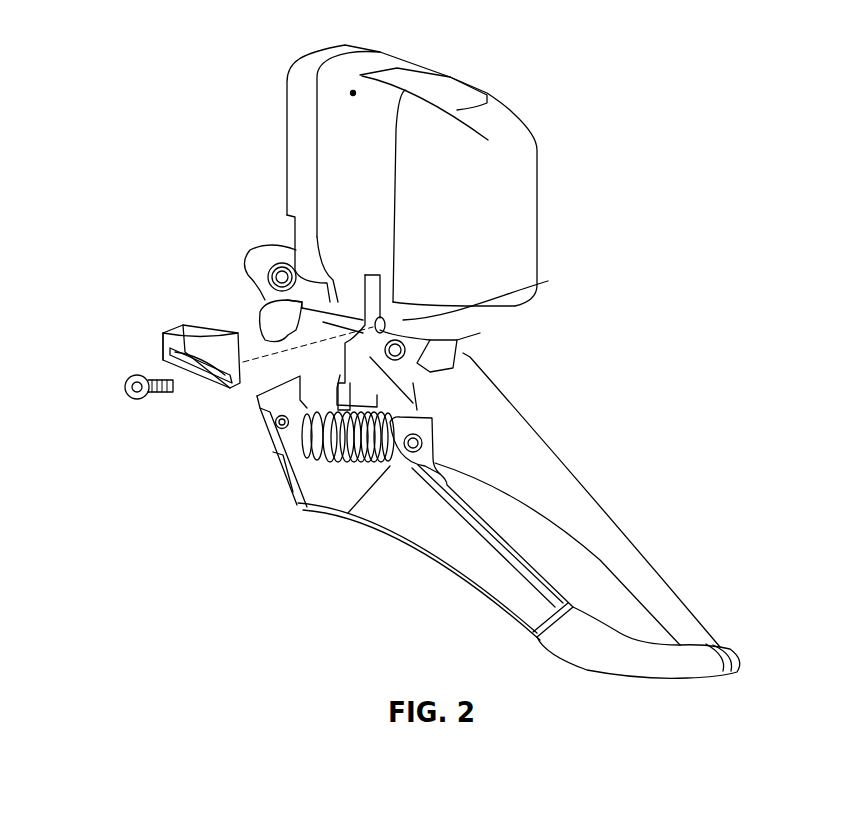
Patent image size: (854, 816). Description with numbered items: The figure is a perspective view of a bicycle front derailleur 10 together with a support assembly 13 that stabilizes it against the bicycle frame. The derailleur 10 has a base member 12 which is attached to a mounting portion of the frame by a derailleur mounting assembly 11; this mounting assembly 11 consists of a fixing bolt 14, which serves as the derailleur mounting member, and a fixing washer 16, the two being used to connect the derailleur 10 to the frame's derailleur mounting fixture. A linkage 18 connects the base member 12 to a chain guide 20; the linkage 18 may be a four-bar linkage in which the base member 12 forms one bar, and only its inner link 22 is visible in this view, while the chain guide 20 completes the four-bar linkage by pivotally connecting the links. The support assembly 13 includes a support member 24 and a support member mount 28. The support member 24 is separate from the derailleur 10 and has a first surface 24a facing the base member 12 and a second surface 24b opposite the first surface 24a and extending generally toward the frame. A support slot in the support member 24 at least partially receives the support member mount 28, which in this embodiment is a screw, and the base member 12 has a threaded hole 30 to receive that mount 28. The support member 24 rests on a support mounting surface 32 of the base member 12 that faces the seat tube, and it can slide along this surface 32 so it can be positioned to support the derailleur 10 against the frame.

The front derailleur 10 is at (561, 44).
The derailleur mounting assembly 11 is at (278, 194).
The base member 12 is at (247, 260).
The support assembly 13 is at (227, 397).
The fixing bolt 14 is at (257, 243).
The fixing washer 16 is at (277, 255).
The linkage 18 is at (320, 469).
The chain guide 20 is at (603, 656).
The inner link 22 is at (383, 465).
The support member 24 is at (163, 333).
The first surface 24a is at (210, 323).
The second surface 24b is at (223, 350).
The support member mount 28 is at (127, 383).
The threaded hole 30 is at (462, 341).
The support mounting surface 32 is at (493, 295).